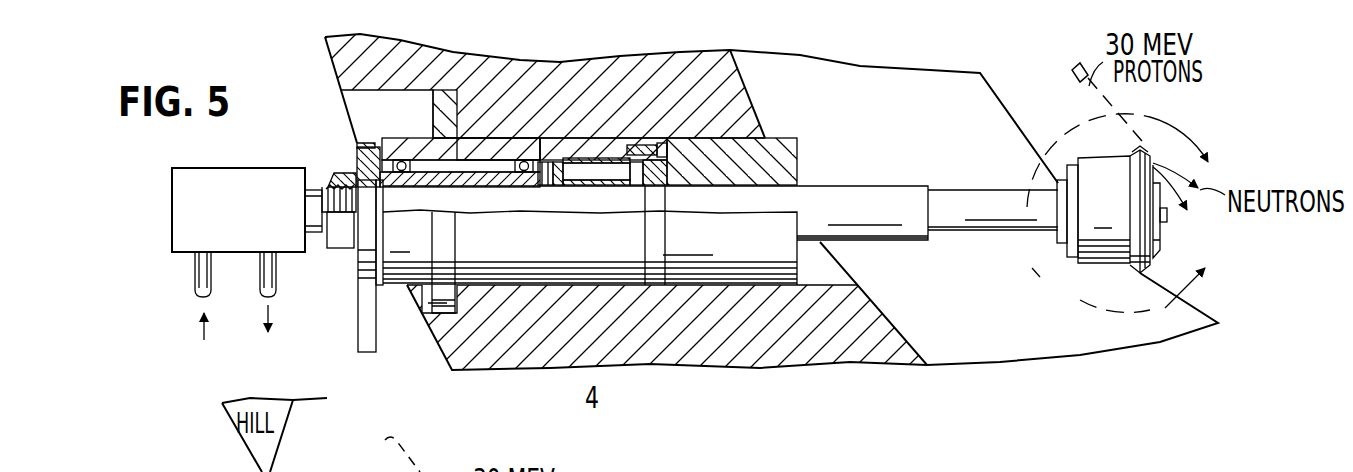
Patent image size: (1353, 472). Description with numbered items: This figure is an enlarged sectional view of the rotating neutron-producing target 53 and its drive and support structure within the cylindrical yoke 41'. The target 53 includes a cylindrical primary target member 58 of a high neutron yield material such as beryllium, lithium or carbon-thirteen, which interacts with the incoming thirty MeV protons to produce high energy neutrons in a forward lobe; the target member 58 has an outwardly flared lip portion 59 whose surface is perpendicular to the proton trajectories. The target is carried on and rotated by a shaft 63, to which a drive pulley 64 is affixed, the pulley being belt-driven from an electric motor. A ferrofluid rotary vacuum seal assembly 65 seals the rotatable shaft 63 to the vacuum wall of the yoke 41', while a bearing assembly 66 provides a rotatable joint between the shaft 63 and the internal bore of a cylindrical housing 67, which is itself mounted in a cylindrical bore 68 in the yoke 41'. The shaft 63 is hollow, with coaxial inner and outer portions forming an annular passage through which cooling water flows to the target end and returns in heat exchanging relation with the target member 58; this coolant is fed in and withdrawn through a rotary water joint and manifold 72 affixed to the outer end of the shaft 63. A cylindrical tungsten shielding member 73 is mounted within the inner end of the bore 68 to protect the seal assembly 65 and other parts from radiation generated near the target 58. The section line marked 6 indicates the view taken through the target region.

The cylindrical yoke 41' is at (626, 206).
The target 53 is at (1158, 148).
The primary target member 58 is at (1087, 260).
The outwardly flared lip portion 59 is at (1137, 267).
The shaft 63 is at (980, 215).
The drive pulley 64 is at (368, 250).
The ferrofluid rotary vacuum seal assembly 65 is at (603, 150).
The bearing assembly 66 is at (484, 150).
The cylindrical housing 67 is at (405, 140).
The cylindrical bore 68 is at (502, 280).
The rotary water joint and manifold 72 is at (232, 188).
The cylindrical shielding member 73 is at (773, 148).
The section view indicator 6 is at (1133, 213).